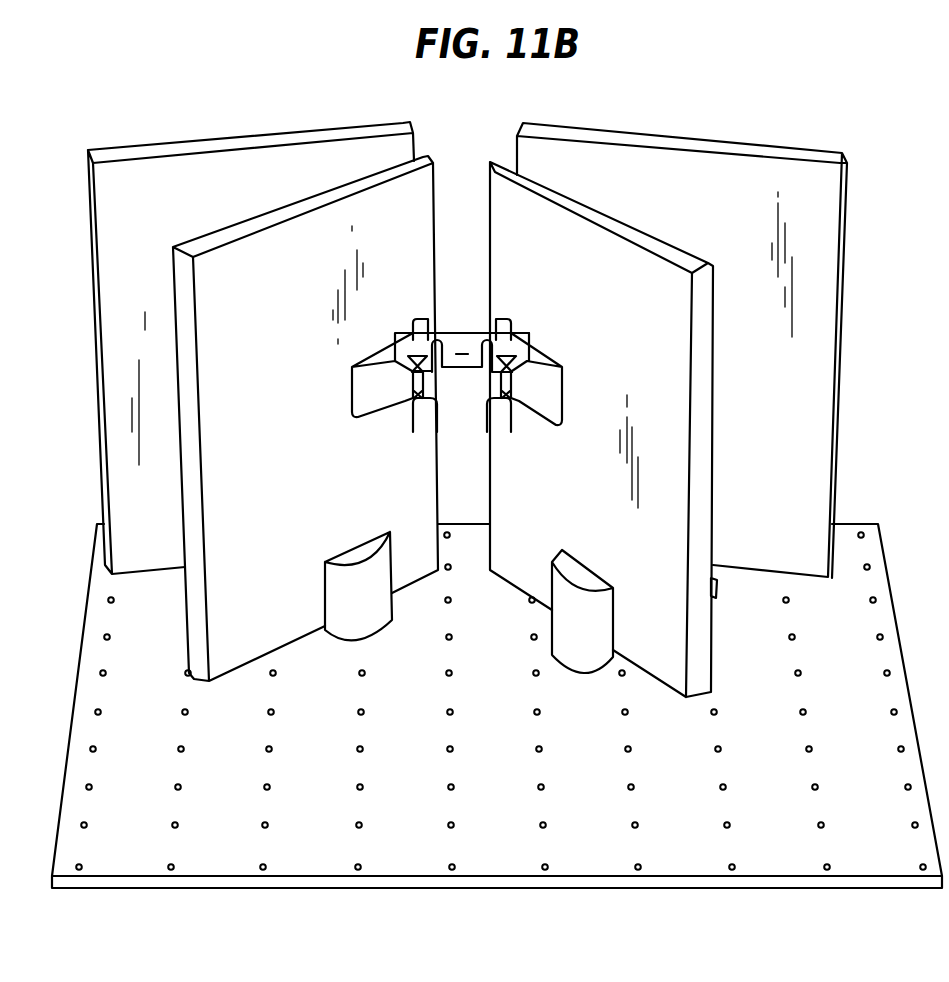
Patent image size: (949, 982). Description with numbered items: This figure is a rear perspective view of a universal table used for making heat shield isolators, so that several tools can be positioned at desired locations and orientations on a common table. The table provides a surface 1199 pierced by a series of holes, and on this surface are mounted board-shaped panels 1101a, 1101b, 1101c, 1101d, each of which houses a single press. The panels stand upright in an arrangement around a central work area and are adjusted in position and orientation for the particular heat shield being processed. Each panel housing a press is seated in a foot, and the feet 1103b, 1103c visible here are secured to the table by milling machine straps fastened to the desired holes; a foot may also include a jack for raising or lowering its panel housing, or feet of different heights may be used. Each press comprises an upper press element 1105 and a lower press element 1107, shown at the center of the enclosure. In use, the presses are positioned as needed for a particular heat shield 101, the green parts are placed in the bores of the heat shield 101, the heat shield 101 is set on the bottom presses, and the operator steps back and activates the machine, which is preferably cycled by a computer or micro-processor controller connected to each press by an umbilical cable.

The heat shield 101 is at (462, 377).
The board-shaped panel 1101a is at (722, 204).
The board-shaped panel 1101b is at (628, 315).
The board-shaped panel 1101c is at (292, 313).
The board-shaped panel 1101d is at (185, 225).
The foot 1103b is at (573, 660).
The foot 1103c is at (357, 634).
The upper press element 1105 is at (497, 312).
The lower press element 1107 is at (415, 418).
The surface 1199 is at (886, 823).